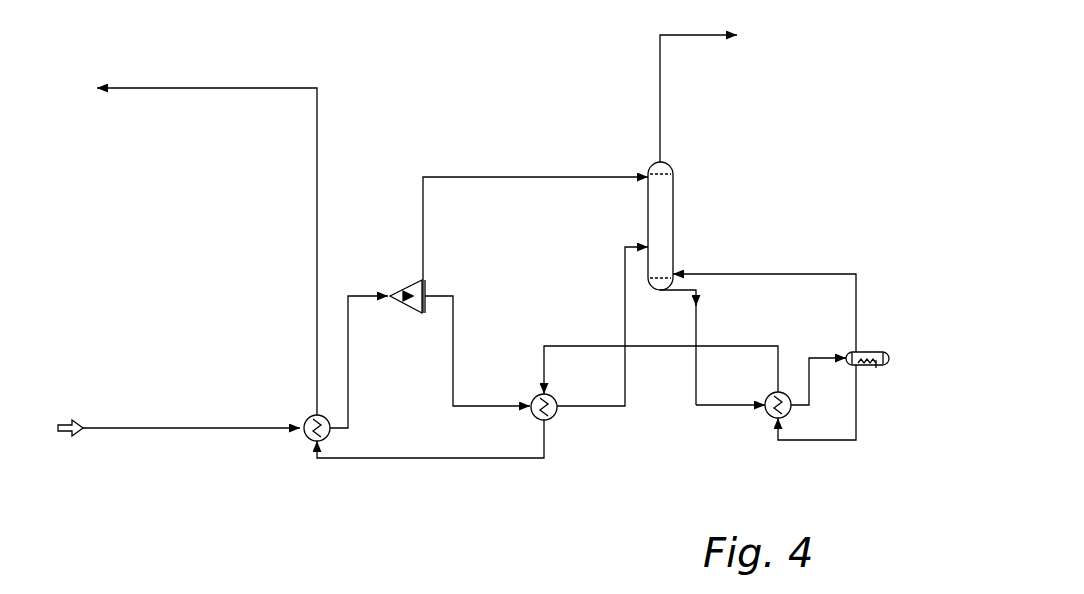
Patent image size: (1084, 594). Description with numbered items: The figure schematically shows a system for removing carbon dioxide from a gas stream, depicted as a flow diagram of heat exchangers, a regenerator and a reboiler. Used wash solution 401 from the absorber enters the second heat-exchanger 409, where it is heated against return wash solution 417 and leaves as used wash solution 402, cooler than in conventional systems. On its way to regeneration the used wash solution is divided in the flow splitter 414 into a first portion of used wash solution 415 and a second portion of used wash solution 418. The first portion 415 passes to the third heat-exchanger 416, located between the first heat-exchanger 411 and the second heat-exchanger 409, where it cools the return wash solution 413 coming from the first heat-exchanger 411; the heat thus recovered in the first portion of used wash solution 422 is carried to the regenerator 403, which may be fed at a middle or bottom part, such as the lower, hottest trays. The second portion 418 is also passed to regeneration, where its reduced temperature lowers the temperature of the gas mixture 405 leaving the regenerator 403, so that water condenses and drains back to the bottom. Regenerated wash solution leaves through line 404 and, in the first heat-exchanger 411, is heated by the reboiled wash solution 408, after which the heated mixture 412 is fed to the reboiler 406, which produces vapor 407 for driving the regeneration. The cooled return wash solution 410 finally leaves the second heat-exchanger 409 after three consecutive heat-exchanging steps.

The used wash solution 401 is at (200, 432).
The used wash solution 402 is at (352, 340).
The regenerator 403 is at (665, 214).
The line 404 is at (698, 315).
The gas mixture 405 is at (662, 100).
The reboiler 406 is at (897, 333).
The vapor 407 is at (857, 297).
The reboiled wash solution 408 is at (857, 398).
The second heat-exchanger 409 is at (308, 442).
The return wash solution 410 is at (316, 248).
The first heat-exchanger 411 is at (745, 408).
The heated mixture 412 is at (796, 400).
The return wash solution 413 is at (601, 345).
The flow splitter 414 is at (420, 280).
The first portion of used wash solution 415 is at (454, 330).
The third heat-exchanger 416 is at (531, 415).
The return wash solution 417 is at (430, 460).
The second portion of used wash solution 418 is at (424, 246).
The first portion of used wash solution 422 is at (592, 408).